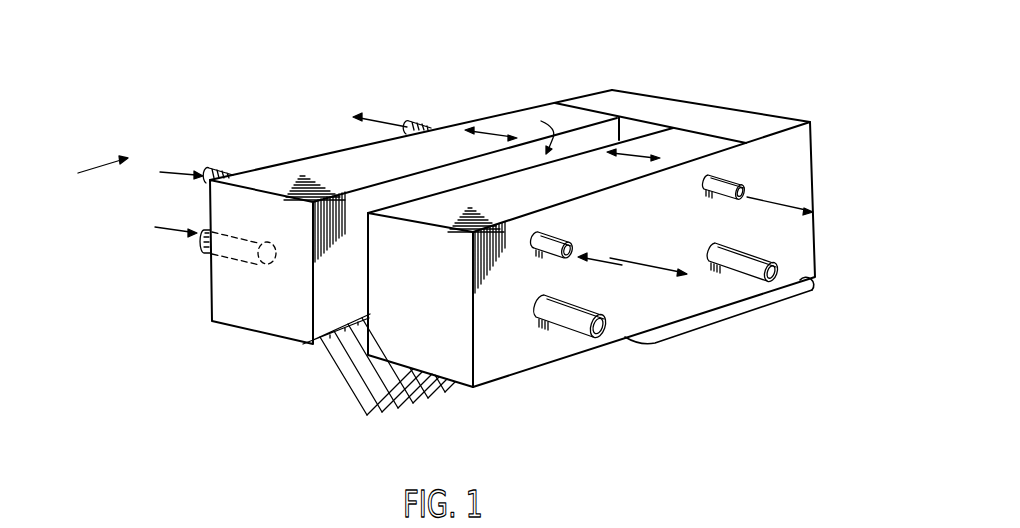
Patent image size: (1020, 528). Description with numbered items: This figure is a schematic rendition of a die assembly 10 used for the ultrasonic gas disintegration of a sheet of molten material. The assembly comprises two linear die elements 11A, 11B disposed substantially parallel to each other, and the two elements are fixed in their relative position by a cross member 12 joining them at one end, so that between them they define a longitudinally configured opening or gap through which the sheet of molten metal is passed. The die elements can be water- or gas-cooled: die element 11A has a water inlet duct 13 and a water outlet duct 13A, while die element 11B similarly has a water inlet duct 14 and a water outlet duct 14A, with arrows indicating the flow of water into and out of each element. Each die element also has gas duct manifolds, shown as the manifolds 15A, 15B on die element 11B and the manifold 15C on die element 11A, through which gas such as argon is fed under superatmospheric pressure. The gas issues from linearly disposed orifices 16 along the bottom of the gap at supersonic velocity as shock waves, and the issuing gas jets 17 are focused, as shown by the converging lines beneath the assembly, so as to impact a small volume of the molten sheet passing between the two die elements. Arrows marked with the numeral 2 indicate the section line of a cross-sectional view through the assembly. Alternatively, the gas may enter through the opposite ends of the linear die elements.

The section line 2 is at (675, 277).
The die assembly 10 is at (481, 90).
The linear die element 11A is at (247, 332).
The linear die element 11B is at (468, 386).
The cross member 12 is at (699, 112).
The water inlet duct 13 is at (231, 155).
The water outlet duct 13A is at (437, 107).
The water inlet duct 14 is at (550, 233).
The water outlet duct 14A is at (733, 181).
The gas duct manifold 15A is at (570, 337).
The gas duct manifold 15B is at (763, 257).
The gas duct manifold 15C is at (205, 251).
The linearly disposed orifices 16 is at (323, 337).
The gas jets 17 is at (352, 400).